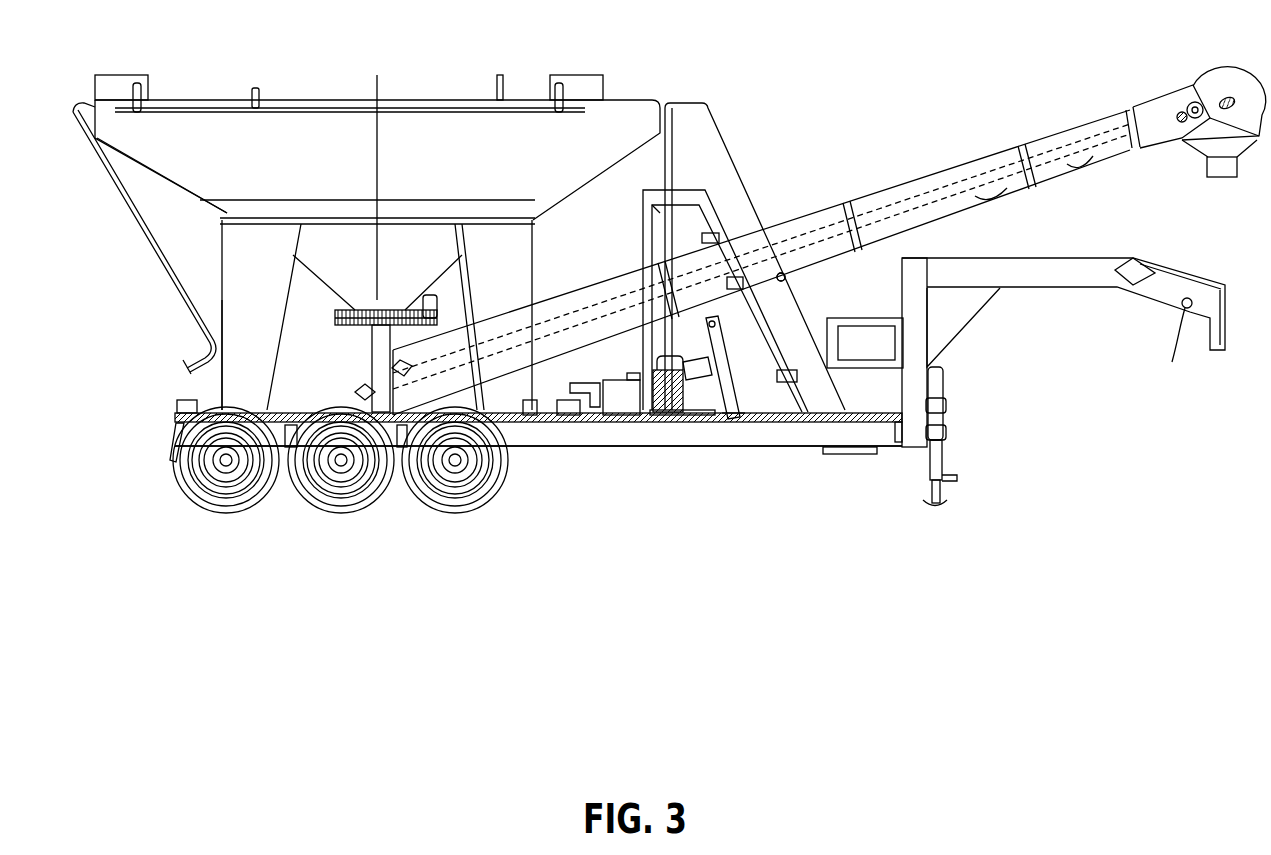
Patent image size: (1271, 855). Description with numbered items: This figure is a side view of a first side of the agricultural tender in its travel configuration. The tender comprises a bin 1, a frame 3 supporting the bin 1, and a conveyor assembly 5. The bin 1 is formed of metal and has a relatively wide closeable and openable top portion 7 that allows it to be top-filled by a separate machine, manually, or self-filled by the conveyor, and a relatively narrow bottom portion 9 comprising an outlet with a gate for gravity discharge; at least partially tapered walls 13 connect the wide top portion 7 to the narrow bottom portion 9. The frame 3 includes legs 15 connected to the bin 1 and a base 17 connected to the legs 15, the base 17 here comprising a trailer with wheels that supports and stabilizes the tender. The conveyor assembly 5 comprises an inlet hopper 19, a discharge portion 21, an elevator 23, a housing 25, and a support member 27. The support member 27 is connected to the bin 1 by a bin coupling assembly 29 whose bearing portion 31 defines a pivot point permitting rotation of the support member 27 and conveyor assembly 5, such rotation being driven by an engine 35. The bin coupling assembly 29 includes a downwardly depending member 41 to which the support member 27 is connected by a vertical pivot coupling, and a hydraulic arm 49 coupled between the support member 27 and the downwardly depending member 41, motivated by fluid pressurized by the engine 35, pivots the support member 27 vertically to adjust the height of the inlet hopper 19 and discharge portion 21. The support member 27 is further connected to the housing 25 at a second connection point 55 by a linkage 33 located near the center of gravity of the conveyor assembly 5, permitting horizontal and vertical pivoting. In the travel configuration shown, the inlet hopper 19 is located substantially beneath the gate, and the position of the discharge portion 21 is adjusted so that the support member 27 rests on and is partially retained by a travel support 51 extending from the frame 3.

The bin 1 is at (431, 120).
The frame 3 is at (590, 434).
The conveyor assembly 5 is at (636, 306).
The top portion 7 is at (282, 106).
The bottom portion 9 is at (357, 305).
The walls 13 is at (184, 168).
The legs 15 is at (223, 378).
The base 17 is at (590, 434).
The inlet hopper 19 is at (430, 300).
The discharge portion 21 is at (1222, 178).
The elevator 23 is at (873, 240).
The housing 25 is at (927, 188).
The support member 27 is at (731, 318).
The bin coupling assembly 29 is at (372, 362).
The bearing portion 31 is at (333, 328).
The linkage 33 is at (783, 273).
The engine 35 is at (673, 421).
The downwardly depending member 41 is at (372, 366).
The hydraulic arm 49 is at (357, 390).
The travel support 51 is at (729, 418).
The second connection point 55 is at (783, 273).